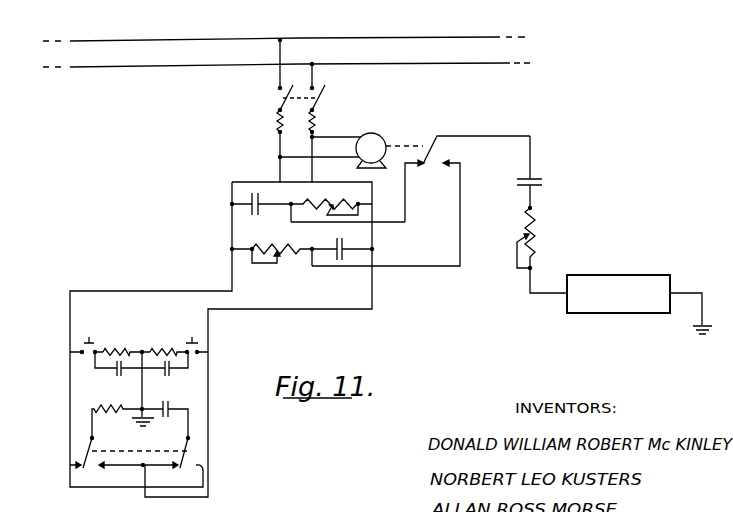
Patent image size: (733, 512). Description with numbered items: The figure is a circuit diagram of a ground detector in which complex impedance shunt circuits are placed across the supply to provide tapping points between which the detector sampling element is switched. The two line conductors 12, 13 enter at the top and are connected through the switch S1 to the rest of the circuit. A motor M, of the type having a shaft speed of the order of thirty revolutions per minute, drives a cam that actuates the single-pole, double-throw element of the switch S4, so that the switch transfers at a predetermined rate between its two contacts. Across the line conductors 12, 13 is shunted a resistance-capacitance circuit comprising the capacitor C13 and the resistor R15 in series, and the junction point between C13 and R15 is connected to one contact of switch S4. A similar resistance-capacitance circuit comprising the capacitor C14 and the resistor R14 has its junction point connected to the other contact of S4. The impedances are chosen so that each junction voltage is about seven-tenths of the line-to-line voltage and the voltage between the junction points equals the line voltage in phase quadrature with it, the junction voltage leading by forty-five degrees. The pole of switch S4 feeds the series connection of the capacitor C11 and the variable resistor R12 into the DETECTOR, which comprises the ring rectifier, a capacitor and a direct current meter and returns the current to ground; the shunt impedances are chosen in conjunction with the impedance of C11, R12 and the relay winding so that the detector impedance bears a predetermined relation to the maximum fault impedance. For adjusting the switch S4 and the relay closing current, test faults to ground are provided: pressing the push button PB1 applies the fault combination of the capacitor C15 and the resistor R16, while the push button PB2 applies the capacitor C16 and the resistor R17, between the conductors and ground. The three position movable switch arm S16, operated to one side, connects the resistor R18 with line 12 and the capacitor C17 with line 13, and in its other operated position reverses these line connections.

The line conductor 12 is at (107, 40).
The line conductor 13 is at (118, 66).
The switch S1 is at (288, 111).
The motor M is at (333, 150).
The switch S4 is at (421, 201).
The capacitor C11 is at (518, 172).
The variable resistor R12 is at (518, 238).
The detector DETECTOR is at (621, 301).
The capacitor C13 is at (260, 213).
The resistor R15 is at (330, 205).
The resistor R14 is at (272, 263).
The capacitor C14 is at (343, 250).
The push button PB1 is at (86, 339).
The push button PB2 is at (196, 339).
The resistor R16 is at (126, 344).
The resistor R17 is at (168, 344).
The capacitor C15 is at (118, 374).
The capacitor C16 is at (165, 380).
The resistor R18 is at (118, 415).
The capacitor C17 is at (169, 415).
The three position movable switch arm S16 is at (130, 451).